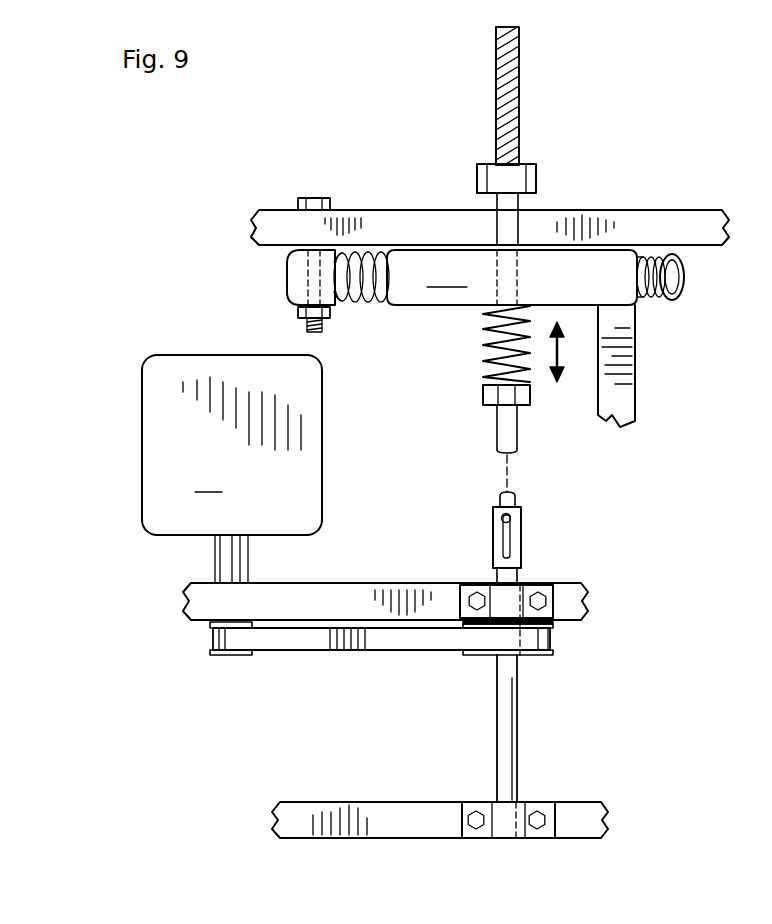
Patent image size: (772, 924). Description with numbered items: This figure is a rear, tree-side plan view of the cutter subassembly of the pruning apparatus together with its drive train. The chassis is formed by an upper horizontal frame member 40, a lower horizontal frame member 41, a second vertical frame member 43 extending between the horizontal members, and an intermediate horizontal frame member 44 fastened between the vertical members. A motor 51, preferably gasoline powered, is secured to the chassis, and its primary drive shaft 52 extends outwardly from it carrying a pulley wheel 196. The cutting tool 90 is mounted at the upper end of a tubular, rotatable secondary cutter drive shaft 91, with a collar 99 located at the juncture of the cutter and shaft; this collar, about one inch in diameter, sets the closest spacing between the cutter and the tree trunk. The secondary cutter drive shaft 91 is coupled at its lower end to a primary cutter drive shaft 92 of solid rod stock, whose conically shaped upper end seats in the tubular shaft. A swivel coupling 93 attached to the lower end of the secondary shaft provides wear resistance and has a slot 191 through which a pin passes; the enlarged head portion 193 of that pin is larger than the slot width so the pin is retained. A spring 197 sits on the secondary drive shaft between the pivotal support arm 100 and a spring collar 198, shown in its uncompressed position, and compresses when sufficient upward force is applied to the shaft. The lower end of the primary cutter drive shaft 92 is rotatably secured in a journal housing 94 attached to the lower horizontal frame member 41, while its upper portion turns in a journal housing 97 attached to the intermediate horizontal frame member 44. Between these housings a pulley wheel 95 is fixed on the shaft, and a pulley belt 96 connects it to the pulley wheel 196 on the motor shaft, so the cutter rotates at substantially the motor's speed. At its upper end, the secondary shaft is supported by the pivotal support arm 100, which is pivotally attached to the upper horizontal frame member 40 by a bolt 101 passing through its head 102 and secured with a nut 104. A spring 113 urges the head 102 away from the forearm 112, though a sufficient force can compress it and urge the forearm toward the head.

The upper horizontal frame member 40 is at (284, 210).
The lower horizontal frame member 41 is at (395, 802).
The second vertical frame member 43 is at (636, 395).
The intermediate horizontal frame member 44 is at (328, 600).
The motor 51 is at (232, 445).
The primary drive shaft 52 is at (215, 557).
The cutting tool 90 is at (518, 95).
The secondary cutter drive shaft 91 is at (520, 200).
The primary cutter drive shaft 92 is at (497, 690).
The swivel coupling 93 is at (493, 530).
The journal housing 94 is at (503, 800).
The pulley wheel 95 is at (538, 655).
The pulley belt 96 is at (315, 650).
The journal housing 97 is at (512, 602).
The collar 99 is at (477, 178).
The pivotal support arm 100 is at (405, 365).
The bolt 101 is at (300, 270).
The head 102 is at (287, 280).
The nut 104 is at (312, 198).
The forearm 112 is at (512, 277).
The spring 113 is at (362, 305).
The slot 191 is at (508, 537).
The head portion 193 is at (510, 518).
The pulley wheel 196 is at (232, 657).
The spring 197 is at (483, 345).
The spring collar 198 is at (530, 395).